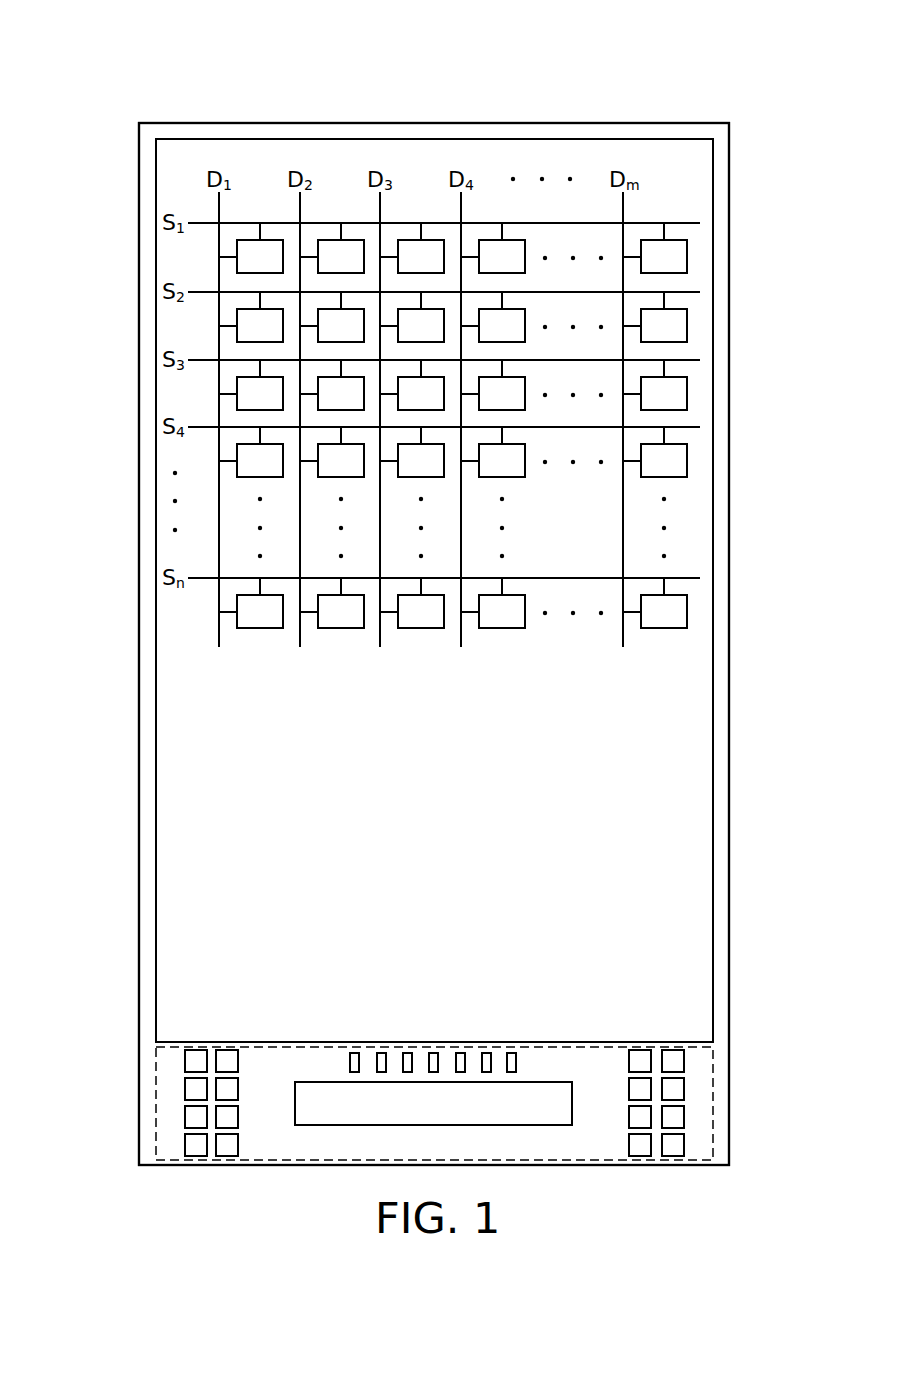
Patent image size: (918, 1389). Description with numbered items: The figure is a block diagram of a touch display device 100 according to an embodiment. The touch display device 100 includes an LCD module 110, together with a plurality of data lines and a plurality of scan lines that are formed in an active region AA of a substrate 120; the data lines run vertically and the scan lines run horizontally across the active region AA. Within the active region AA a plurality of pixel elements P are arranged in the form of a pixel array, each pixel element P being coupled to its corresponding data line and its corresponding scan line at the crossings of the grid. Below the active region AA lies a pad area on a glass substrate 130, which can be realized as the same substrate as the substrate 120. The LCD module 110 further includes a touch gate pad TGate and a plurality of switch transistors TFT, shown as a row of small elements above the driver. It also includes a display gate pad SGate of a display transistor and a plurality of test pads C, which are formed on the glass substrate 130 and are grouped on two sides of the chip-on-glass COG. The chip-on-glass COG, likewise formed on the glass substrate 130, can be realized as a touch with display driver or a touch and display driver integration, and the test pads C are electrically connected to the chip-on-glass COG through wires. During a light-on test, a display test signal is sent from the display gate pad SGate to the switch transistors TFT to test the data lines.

The touch display device 100 is at (66, 62).
The LCD module 110 is at (729, 242).
The substrate 120 is at (713, 292).
The glass substrate 130 is at (690, 1045).
The active region AA is at (697, 175).
The pixel element P is at (274, 240).
The touch gate pad TGate is at (228, 1050).
The display gate pad SGate is at (196, 1050).
The switch transistor TFT is at (518, 1032).
The chip-on-glass COG is at (433, 1103).
The test pad C is at (120, 1050).